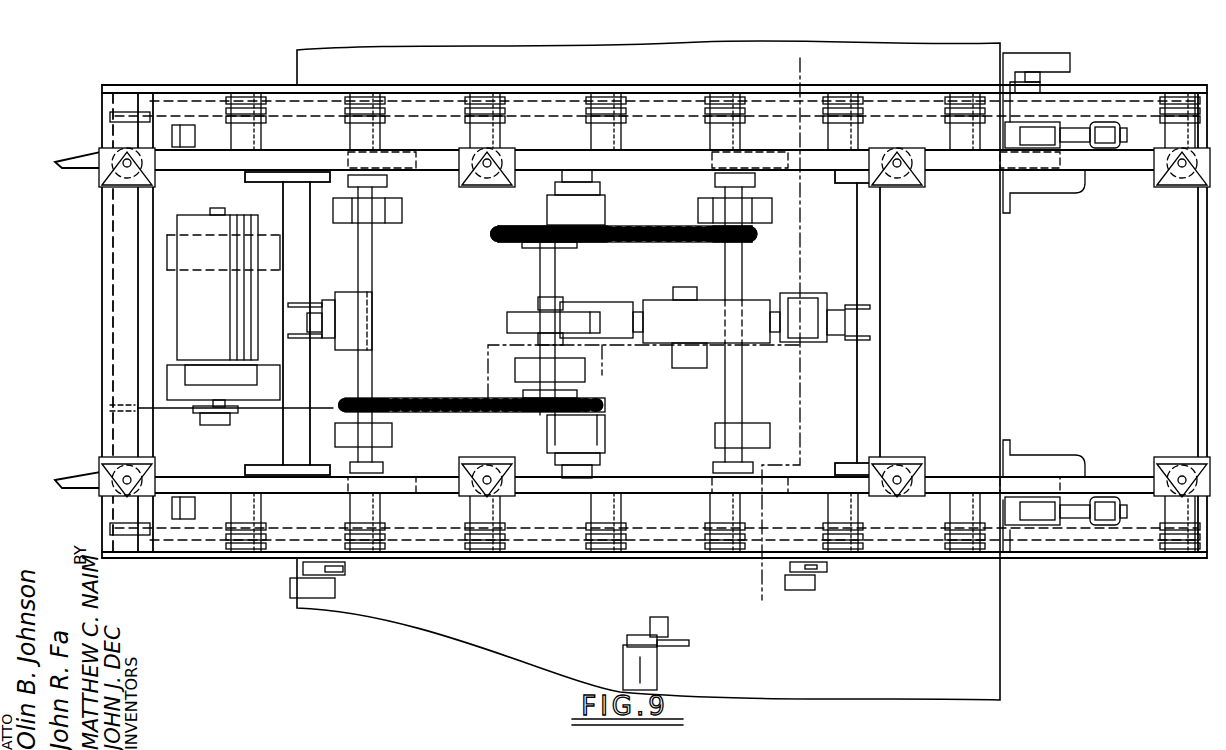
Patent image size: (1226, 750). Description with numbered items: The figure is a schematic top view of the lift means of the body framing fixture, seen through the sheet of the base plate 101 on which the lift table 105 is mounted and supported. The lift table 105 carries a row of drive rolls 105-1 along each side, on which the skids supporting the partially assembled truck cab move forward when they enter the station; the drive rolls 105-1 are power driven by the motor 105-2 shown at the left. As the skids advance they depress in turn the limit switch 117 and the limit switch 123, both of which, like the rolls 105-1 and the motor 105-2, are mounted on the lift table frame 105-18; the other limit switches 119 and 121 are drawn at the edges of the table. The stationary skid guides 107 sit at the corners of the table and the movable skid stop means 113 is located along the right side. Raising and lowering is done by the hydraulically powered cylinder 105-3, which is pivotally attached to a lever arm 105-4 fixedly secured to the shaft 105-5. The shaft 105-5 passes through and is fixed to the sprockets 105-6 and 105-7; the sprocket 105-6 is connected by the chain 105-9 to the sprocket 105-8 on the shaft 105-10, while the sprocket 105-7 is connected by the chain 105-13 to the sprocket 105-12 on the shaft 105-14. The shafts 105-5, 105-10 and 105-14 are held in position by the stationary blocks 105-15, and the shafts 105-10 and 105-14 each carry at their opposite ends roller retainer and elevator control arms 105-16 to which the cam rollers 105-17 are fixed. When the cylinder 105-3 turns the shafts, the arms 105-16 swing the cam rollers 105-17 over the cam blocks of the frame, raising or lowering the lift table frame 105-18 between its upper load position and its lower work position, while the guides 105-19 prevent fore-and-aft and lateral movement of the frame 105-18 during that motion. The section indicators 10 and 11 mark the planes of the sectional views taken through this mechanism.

The section line 10- 10 is at (800, 66).
The section line 11- 11 is at (323, 430).
The base plate 101 is at (880, 680).
The lift table 105 is at (1045, 553).
The drive rolls 105-1 is at (385, 135).
The motor 105-2 is at (190, 306).
The hydraulically powered cylinder 105-3 is at (670, 308).
The lever arm 105-4 is at (507, 322).
The shaft 105-5 is at (555, 292).
The sprocket 105-6 is at (525, 246).
The sprocket 105-7 is at (500, 400).
The sprocket 105-8 is at (742, 244).
The chain 105-9 is at (651, 232).
The shaft 105-10 is at (733, 366).
The sprocket 105-12 is at (515, 370).
The chain 105-13 is at (412, 404).
The shaft 105-14 is at (538, 330).
The stationary blocks 105-15 is at (380, 212).
The roller retainer and elevator control arms 105-16 is at (393, 180).
The cam rollers 105-17 is at (470, 127).
The lift table frame 105-18 is at (563, 93).
The guides 105-19 is at (587, 190).
The stationary skid guides 107 is at (184, 126).
The movable skid stop means 113 is at (1073, 180).
The limit switch 117 is at (336, 584).
The limit switch 119 is at (668, 629).
The limit switch 121 is at (1057, 62).
The limit switch 123 is at (800, 592).